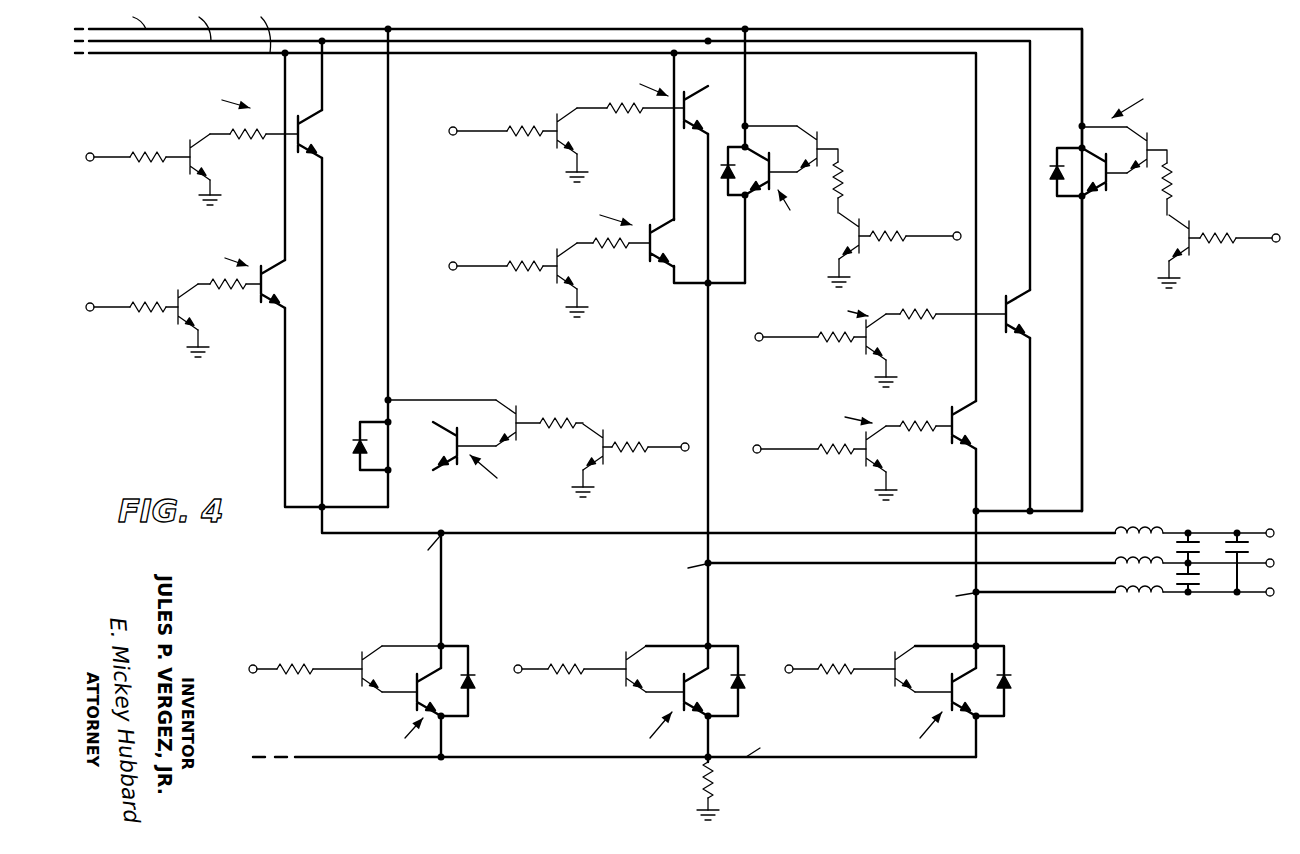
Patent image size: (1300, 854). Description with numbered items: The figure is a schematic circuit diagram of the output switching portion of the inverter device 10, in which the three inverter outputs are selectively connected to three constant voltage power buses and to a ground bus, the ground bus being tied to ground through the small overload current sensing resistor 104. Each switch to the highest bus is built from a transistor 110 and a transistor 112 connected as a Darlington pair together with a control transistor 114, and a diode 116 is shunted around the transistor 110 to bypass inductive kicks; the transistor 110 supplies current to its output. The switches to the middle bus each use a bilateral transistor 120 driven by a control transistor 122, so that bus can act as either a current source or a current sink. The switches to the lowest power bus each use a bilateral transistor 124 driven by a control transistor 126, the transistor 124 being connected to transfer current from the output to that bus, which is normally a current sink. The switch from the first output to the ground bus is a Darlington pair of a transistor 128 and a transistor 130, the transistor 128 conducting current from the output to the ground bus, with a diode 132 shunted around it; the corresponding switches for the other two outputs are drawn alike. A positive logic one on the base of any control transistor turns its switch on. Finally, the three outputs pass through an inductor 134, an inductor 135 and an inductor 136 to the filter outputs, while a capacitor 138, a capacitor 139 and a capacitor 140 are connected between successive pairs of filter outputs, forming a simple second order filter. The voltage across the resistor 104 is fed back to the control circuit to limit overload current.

The inverter device 10 is at (198, 422).
The overload current sensing resistor 104 is at (710, 787).
The transistor 110 is at (455, 446).
The transistor 112 is at (516, 418).
The control transistor 114 is at (605, 441).
The diode 116 is at (352, 441).
The bilateral transistor 120 is at (304, 121).
The control transistor 122 is at (186, 150).
The bilateral transistor 124 is at (265, 284).
The control transistor 126 is at (176, 302).
The transistor 128 is at (410, 700).
The transistor 130 is at (360, 659).
The diode 132 is at (471, 690).
The inductor 134 is at (1138, 526).
The inductor 135 is at (1126, 563).
The inductor 136 is at (1126, 592).
The capacitor 138 is at (1196, 546).
The capacitor 139 is at (1193, 585).
The capacitor 140 is at (1237, 540).